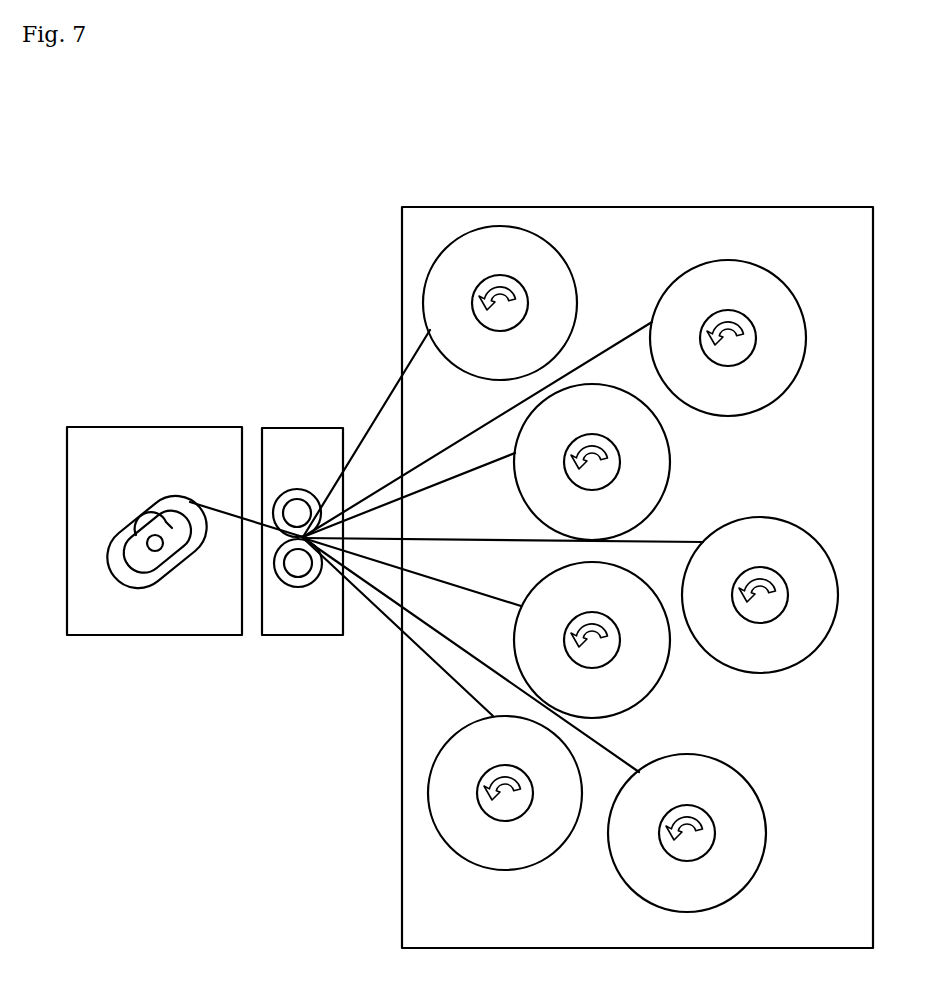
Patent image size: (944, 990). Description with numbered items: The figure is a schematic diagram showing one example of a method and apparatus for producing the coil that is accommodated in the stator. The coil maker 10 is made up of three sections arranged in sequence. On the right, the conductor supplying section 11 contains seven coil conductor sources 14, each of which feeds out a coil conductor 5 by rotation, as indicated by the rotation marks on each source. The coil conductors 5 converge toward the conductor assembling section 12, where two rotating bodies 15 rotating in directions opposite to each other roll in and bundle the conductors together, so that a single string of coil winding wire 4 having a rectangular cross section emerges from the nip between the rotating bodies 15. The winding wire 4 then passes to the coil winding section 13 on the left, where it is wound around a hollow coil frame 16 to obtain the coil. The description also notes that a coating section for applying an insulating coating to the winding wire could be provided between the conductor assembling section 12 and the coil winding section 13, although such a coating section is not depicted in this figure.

The coil maker 10 is at (246, 165).
The conductor supplying section 11 is at (578, 207).
The conductor assembling section 12 is at (290, 428).
The coil winding section 13 is at (140, 427).
The coil conductor source 14 is at (780, 280).
The rotating body 15 is at (302, 582).
The hollow coil frame 16 is at (130, 570).
The coil winding wire 4 is at (215, 508).
The coil conductor 5 is at (392, 397).